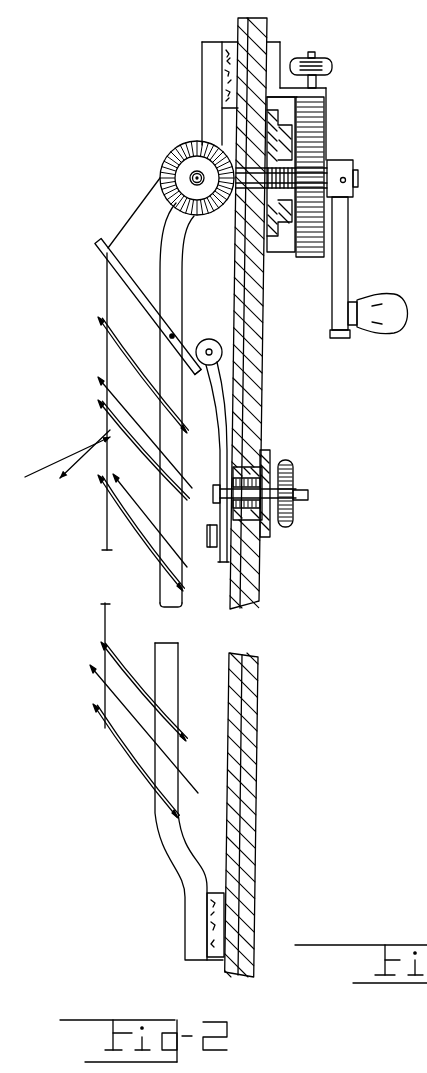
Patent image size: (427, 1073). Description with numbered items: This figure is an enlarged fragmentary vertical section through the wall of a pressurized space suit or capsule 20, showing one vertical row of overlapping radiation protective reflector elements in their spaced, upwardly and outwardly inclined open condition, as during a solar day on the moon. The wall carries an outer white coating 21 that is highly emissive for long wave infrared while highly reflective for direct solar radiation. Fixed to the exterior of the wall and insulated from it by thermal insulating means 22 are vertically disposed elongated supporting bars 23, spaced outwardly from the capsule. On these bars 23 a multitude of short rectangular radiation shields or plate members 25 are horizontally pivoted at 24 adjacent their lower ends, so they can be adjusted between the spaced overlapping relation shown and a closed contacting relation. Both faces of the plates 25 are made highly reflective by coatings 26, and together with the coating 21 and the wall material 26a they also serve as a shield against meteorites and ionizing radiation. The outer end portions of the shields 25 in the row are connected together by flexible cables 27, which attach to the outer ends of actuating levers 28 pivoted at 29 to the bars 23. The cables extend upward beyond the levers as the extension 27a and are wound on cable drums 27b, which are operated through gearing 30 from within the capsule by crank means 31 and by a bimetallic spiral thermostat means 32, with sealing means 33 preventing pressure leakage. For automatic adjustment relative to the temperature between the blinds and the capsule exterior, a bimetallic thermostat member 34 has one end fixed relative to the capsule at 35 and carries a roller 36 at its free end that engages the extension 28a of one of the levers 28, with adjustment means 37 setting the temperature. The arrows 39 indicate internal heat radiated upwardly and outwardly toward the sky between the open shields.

The portion of pressurized space suit or capsule 20 is at (260, 405).
The outer white coating 21 is at (239, 333).
The thermal insulating means 22 is at (233, 45).
The supporting bars or members 23 is at (165, 438).
The pivot 24 is at (178, 422).
The radiation shields or plate members 25 is at (132, 370).
The coatings 26 is at (116, 341).
The material of the capsule or suit walls 26a is at (231, 853).
The flexible connectors or cables 27 is at (105, 612).
The cable extension 27a is at (128, 223).
The cable drums 27b is at (168, 158).
The actuating levers 28 is at (133, 282).
The lever extension 28a is at (197, 388).
The lever pivot 29 is at (173, 334).
The gearing 30 is at (200, 190).
The crank means 31 is at (285, 176).
The bimetallic spiral thermostat means 32 is at (320, 122).
The sealing means 33 is at (279, 226).
The bimetallic thermostat members 34 is at (225, 452).
The fixed end 35 is at (211, 548).
The roller 36 is at (205, 340).
The adjustment means 37 is at (300, 494).
The arrows 39 is at (133, 410).